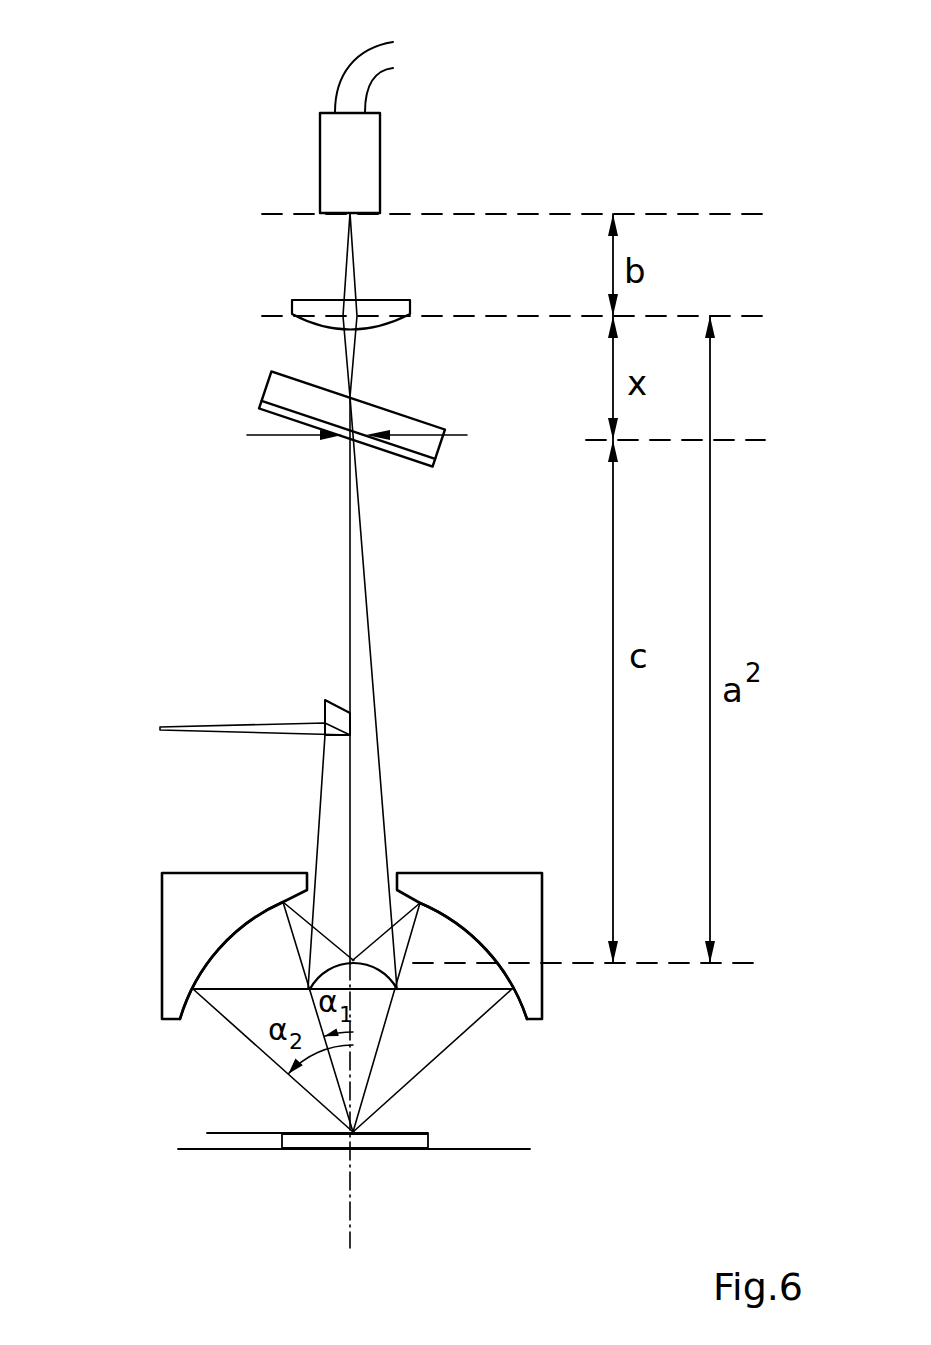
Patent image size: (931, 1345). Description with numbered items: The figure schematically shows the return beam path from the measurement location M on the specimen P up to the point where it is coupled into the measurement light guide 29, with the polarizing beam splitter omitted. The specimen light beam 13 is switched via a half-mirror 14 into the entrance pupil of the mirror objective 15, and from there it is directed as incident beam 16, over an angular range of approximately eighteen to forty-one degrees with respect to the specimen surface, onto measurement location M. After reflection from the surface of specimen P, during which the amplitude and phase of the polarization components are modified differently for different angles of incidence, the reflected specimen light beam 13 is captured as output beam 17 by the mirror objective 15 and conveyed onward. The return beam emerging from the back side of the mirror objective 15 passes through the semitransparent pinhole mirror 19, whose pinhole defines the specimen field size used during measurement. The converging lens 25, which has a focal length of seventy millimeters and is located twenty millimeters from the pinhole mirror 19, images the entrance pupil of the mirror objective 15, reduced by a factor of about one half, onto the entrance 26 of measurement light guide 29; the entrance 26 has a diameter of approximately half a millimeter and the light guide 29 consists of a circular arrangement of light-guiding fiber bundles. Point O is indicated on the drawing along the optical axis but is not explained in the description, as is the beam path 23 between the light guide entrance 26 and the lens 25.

The entrance of measurement light guide 26 is at (340, 150).
The measurement light guide 29 is at (372, 72).
The light beam 23 is at (348, 267).
The converging lens 25 is at (292, 307).
The pinhole mirror 19 is at (283, 393).
The half-mirror 14 is at (325, 713).
The specimen light beam 13 is at (187, 727).
The mirror objective 15 is at (197, 897).
The incident beam 16 is at (235, 1000).
The output beam 17 is at (450, 1012).
The intermediate image point O is at (353, 960).
The specimen P is at (413, 1142).
The measurement location M is at (353, 1132).